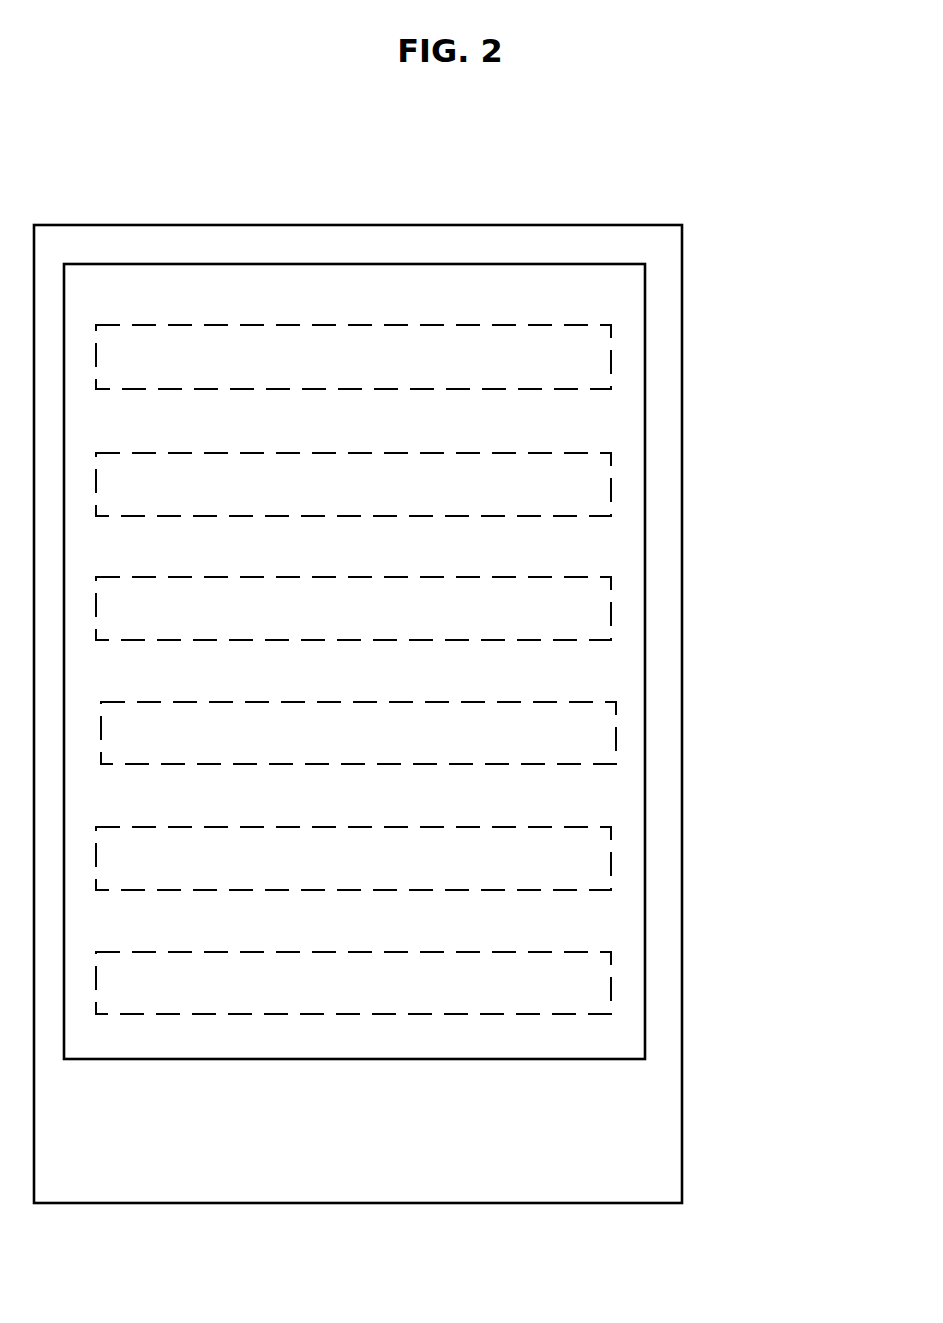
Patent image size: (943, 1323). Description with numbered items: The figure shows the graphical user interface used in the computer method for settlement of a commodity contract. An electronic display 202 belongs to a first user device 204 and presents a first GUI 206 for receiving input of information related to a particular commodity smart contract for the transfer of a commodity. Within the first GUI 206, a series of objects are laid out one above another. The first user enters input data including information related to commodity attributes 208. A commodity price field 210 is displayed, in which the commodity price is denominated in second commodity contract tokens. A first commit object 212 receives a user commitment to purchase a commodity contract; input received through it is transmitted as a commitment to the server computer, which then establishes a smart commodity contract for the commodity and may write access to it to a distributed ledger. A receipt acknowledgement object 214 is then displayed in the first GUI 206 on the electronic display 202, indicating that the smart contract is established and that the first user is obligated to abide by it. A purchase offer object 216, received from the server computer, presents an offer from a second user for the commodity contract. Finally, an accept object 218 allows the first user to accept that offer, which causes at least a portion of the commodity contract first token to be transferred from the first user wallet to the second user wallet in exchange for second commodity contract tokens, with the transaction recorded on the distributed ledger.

The electronic display 202 is at (333, 264).
The first user device 204 is at (447, 225).
The first GUI 206 is at (176, 280).
The commodity attributes 208 is at (611, 365).
The commodity price field 210 is at (611, 490).
The first commit object 212 is at (611, 612).
The receipt acknowledgement object 214 is at (616, 733).
The purchase offer object 216 is at (611, 860).
The accept object 218 is at (611, 985).